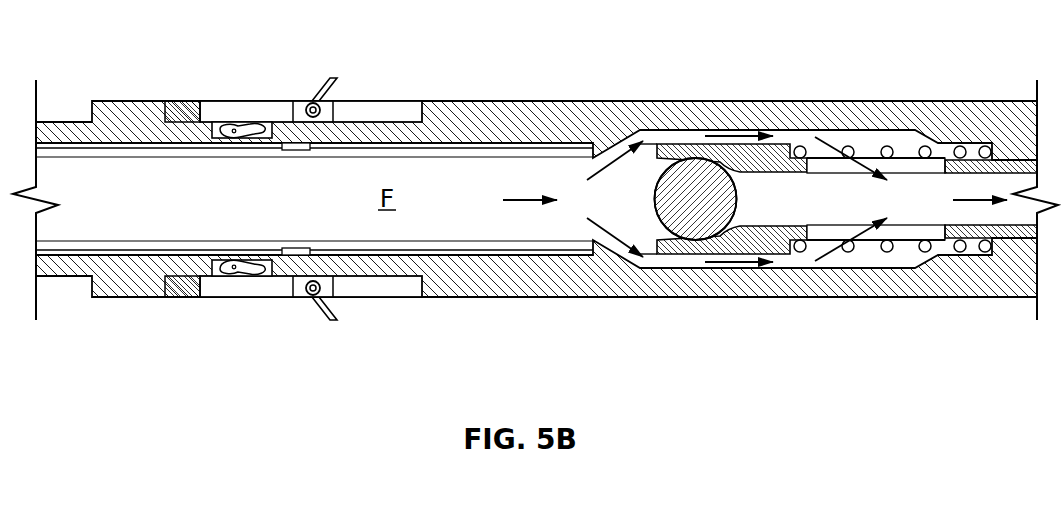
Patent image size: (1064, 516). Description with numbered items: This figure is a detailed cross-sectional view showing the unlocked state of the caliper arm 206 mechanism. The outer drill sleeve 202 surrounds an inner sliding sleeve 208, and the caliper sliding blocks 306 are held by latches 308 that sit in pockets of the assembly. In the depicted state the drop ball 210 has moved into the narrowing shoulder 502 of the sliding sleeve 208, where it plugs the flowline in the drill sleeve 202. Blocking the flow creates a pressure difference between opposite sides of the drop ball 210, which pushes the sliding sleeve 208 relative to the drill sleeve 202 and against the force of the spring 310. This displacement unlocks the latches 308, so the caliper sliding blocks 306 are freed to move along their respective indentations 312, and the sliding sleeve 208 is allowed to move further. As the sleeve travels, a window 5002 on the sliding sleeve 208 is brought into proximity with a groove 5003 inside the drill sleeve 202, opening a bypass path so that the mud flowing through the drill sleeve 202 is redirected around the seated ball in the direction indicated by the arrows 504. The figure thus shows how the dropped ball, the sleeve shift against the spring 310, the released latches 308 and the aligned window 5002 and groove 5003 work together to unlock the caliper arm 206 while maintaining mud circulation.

The drill sleeve 202 is at (547, 288).
The caliper arm 206 is at (332, 322).
The sliding sleeve 208 is at (457, 250).
The drop ball 210 is at (697, 228).
The caliper sliding block 306 is at (307, 101).
The latch 308 is at (253, 132).
The spring 310 is at (923, 253).
The indentation 312 is at (380, 112).
The shoulder 502 is at (668, 158).
The arrows 504 is at (516, 200).
The window 5002 is at (615, 250).
The groove 5003 is at (872, 253).